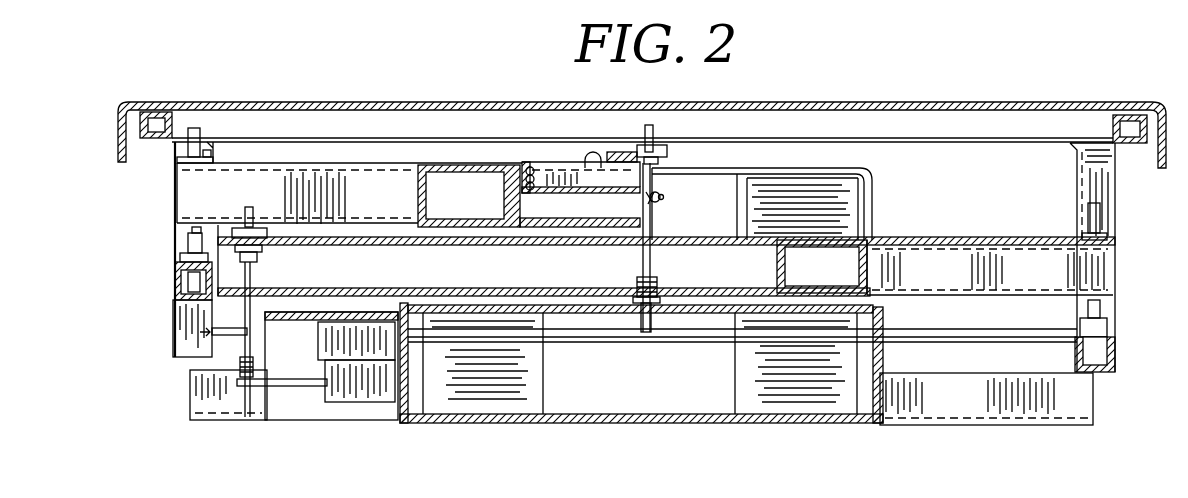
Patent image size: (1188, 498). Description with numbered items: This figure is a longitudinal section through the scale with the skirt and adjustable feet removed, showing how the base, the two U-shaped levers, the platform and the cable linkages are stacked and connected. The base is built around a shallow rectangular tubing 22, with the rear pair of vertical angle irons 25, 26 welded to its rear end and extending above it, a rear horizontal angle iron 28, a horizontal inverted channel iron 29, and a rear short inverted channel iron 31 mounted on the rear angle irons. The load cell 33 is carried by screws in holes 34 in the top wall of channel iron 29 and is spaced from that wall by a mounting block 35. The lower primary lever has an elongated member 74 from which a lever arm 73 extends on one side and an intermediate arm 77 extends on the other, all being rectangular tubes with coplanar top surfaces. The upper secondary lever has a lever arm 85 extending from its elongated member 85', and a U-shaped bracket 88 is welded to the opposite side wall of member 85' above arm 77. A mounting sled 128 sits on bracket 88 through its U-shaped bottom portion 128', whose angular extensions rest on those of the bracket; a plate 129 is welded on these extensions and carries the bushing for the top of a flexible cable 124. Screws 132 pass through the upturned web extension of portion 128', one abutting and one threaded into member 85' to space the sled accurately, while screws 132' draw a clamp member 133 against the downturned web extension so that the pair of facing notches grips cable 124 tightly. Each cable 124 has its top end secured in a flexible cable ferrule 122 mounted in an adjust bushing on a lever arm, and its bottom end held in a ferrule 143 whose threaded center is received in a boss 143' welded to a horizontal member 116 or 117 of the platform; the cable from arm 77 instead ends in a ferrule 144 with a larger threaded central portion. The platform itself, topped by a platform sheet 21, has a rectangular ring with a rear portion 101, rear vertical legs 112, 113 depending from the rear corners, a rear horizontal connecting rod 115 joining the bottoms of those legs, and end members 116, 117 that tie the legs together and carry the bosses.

The platform sheet 21 is at (942, 106).
The rear portion 101 is at (855, 128).
The vertical leg 112 is at (176, 230).
The vertical leg 113 is at (1117, 208).
The flexible cable ferrule 122 is at (200, 133).
The lever arm 85 is at (349, 169).
The elongated member 85' is at (529, 170).
The mounting sled 128 is at (581, 153).
The bottom portion of the sled 128' is at (581, 204).
The screw 132 is at (533, 152).
The screw 132' is at (691, 205).
The clamp member 133 is at (660, 194).
The plate 129 is at (623, 152).
The flexible cable 124 is at (651, 262).
The short inverted channel iron 31 is at (723, 170).
The U-shaped bracket 88 is at (585, 244).
The elongated member 74 is at (777, 262).
The lever arm 73 is at (923, 240).
The holes 34 is at (383, 316).
The ferrule 143 is at (642, 310).
The boss 143' is at (154, 244).
The horizontal member 117 is at (1103, 370).
The horizontal member 116 is at (173, 292).
The intermediate arm 77 is at (283, 237).
The rear horizontal connecting rod 115 is at (940, 330).
The shallow rectangular tubing 22 is at (404, 418).
The vertical angle iron 25 is at (543, 378).
The vertical angle iron 26 is at (735, 373).
The horizontal inverted channel iron 29 is at (281, 420).
The mounting block 35 is at (320, 337).
The load cell 33 is at (345, 402).
The ferrule 144 is at (253, 407).
The rear horizontal angle iron 28 is at (188, 393).